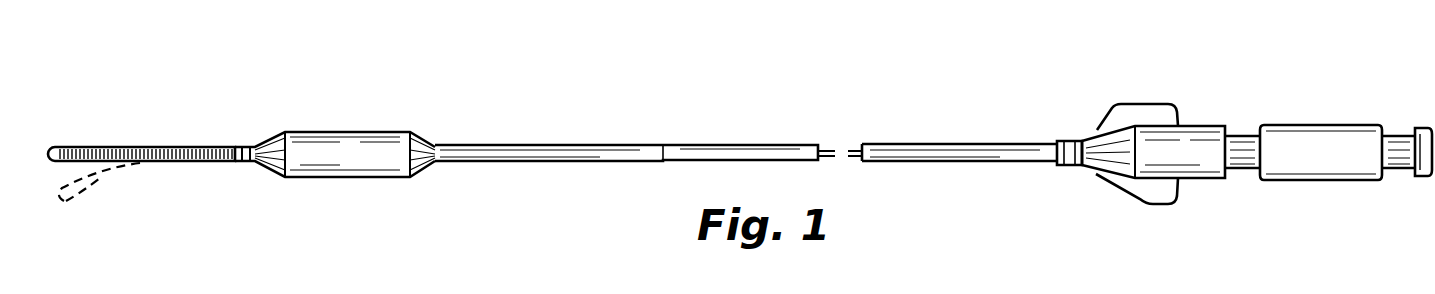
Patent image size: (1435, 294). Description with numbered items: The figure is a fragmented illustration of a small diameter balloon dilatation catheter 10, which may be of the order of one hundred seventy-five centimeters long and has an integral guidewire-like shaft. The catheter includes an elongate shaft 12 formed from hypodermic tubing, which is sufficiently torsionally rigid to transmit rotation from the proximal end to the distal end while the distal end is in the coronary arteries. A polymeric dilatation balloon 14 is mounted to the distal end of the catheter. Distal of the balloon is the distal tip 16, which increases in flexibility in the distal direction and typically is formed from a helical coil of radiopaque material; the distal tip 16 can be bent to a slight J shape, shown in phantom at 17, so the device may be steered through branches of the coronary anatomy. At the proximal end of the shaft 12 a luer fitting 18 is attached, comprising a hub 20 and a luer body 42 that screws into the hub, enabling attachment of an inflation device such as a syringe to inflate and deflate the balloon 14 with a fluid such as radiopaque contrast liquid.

The balloon dilatation catheter 10 is at (470, 172).
The shaft 12 is at (736, 147).
The dilatation balloon 14 is at (370, 145).
The distal tip 16 is at (92, 146).
The J shape 17 is at (98, 183).
The luer fitting 18 is at (1302, 118).
The hub 20 is at (1190, 140).
The luer body 42 is at (1330, 166).